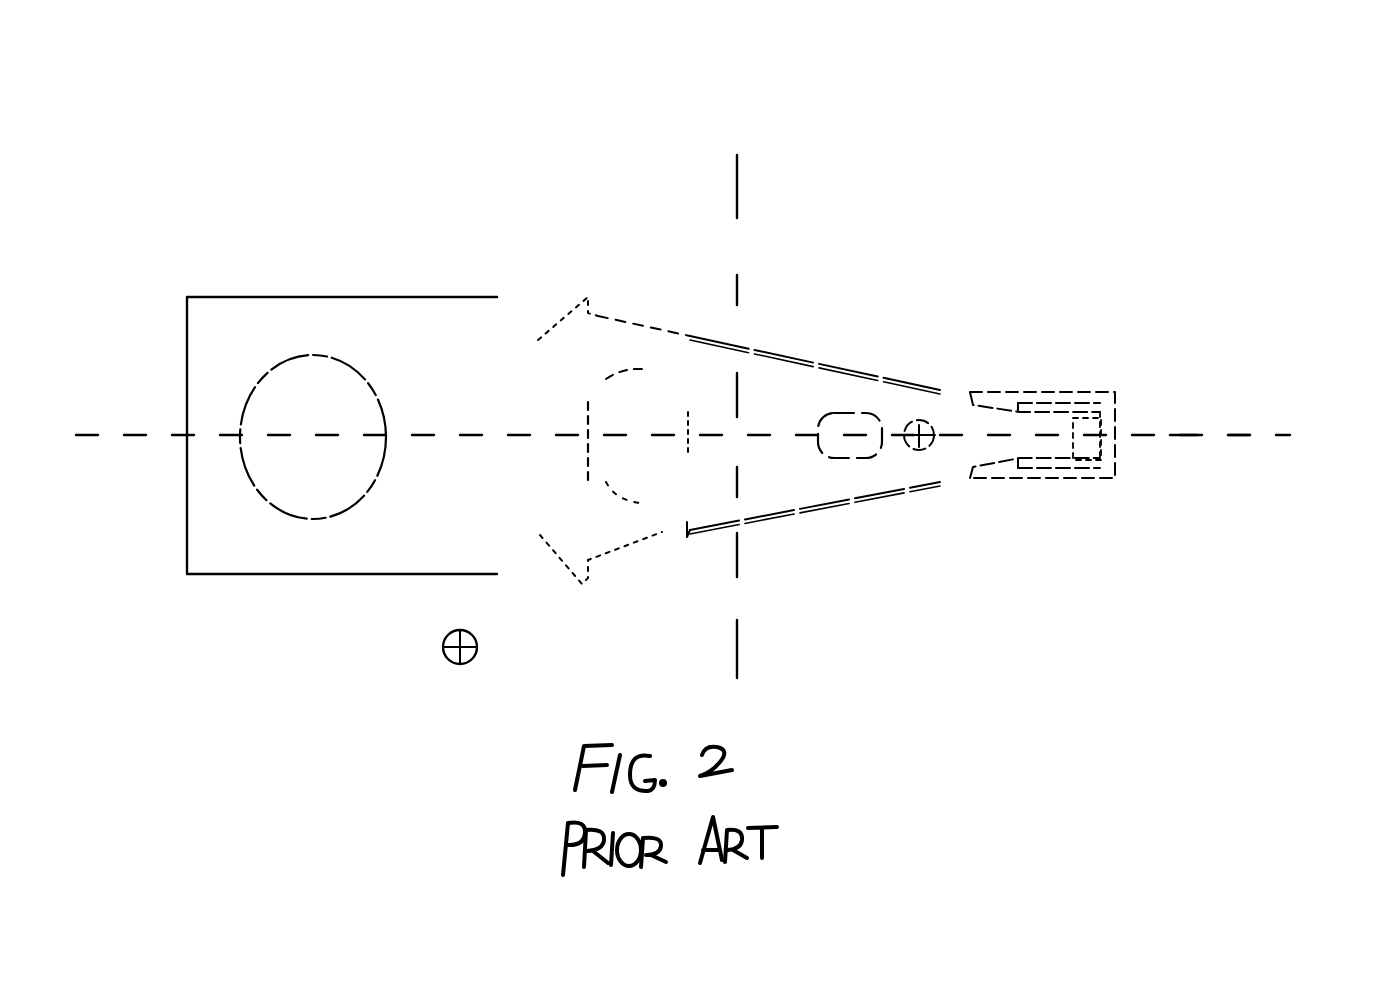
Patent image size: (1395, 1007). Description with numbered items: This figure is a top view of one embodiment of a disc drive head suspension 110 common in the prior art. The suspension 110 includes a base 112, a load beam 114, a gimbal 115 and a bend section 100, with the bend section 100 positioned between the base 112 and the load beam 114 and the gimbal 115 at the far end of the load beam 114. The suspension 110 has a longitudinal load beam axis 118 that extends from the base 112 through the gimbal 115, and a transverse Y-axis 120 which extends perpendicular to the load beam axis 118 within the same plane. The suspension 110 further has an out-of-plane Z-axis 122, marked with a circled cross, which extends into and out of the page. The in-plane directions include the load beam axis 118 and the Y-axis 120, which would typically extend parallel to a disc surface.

The prior art nozzle / cone body 100 is at (617, 340).
The prior art assembly 110 is at (1180, 88).
The mounting block with bore 112 is at (327, 275).
The tapered section 114 is at (785, 380).
The connector 115 is at (1082, 346).
The central axis 118 is at (1330, 395).
The reference plane line 120 is at (777, 138).
The datum target 122 is at (437, 652).